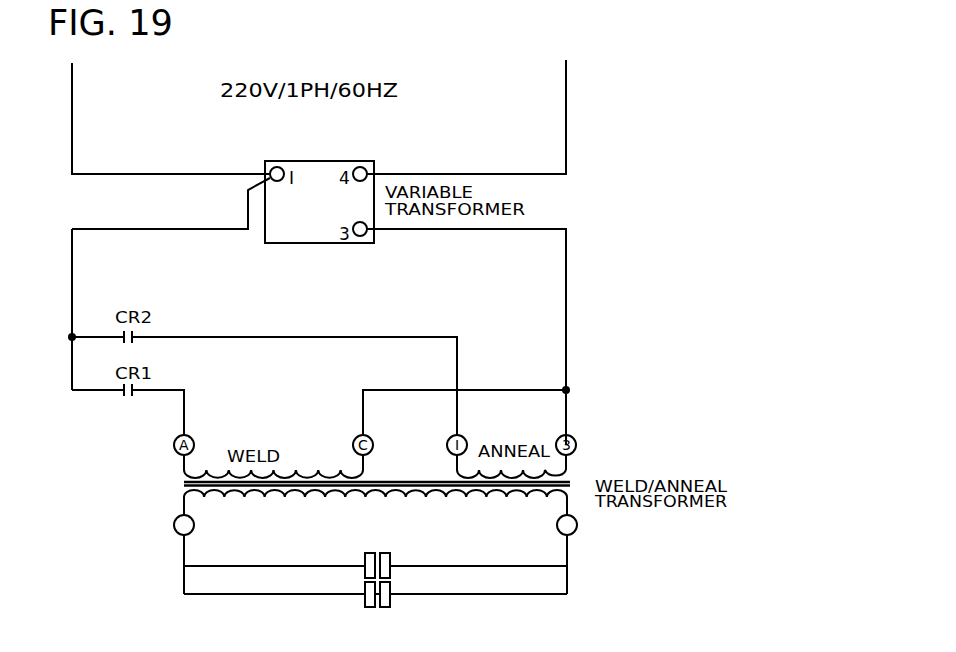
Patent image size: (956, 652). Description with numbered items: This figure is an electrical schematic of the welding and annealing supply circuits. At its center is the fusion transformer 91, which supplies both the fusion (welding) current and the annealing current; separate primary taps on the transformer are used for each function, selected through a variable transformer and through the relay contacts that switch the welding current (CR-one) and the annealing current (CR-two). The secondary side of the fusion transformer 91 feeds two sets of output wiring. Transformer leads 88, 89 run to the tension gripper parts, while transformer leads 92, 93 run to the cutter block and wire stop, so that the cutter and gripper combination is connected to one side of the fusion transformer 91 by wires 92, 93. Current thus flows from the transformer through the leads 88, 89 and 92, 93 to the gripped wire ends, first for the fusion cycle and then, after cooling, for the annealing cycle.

The transformer lead 88 is at (327, 566).
The transformer lead 89 is at (184, 570).
The fusion transformer 91 is at (260, 497).
The transformer lead 92 is at (470, 566).
The transformer lead 93 is at (567, 573).